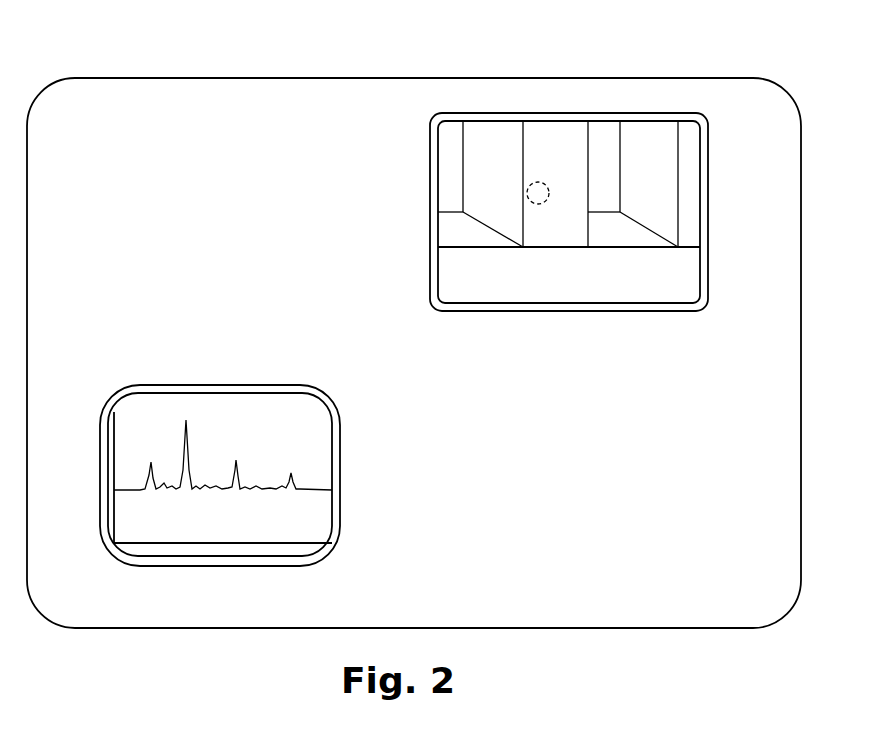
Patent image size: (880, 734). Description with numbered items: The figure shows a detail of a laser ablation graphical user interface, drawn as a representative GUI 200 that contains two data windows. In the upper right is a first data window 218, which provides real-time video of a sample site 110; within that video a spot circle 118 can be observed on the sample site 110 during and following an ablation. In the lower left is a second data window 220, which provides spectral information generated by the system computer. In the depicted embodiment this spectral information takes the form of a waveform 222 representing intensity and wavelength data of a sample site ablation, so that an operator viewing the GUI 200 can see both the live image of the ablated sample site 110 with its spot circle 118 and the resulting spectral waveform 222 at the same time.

The graphical user interface 200 is at (527, 53).
The first data window 218 is at (708, 183).
The sample site 110 is at (553, 135).
The spot circle 118 is at (540, 207).
The second data window 220 is at (340, 463).
The waveform 222 is at (188, 444).